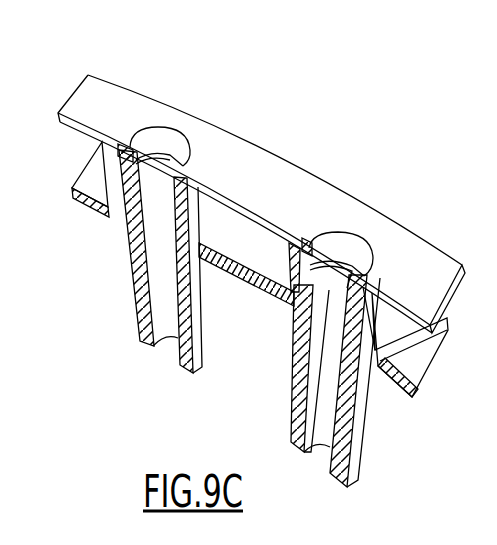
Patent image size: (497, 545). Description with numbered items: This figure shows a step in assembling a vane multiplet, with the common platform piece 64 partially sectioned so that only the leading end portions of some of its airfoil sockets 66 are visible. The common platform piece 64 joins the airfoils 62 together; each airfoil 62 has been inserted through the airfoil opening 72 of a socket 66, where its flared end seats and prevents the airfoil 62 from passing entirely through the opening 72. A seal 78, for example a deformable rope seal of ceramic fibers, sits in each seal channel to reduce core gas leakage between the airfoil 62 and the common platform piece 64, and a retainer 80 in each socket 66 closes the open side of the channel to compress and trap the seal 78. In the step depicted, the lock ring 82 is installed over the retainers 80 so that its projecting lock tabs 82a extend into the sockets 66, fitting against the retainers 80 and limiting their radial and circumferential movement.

The lock ring 82 is at (290, 168).
The projecting lock tab 82a is at (148, 150).
The seal 78 is at (108, 157).
The retainer 80 is at (127, 215).
The airfoil 62 is at (138, 314).
The airfoil opening 72 is at (160, 208).
The airfoil socket 66 is at (248, 228).
The common platform piece 64 is at (238, 278).